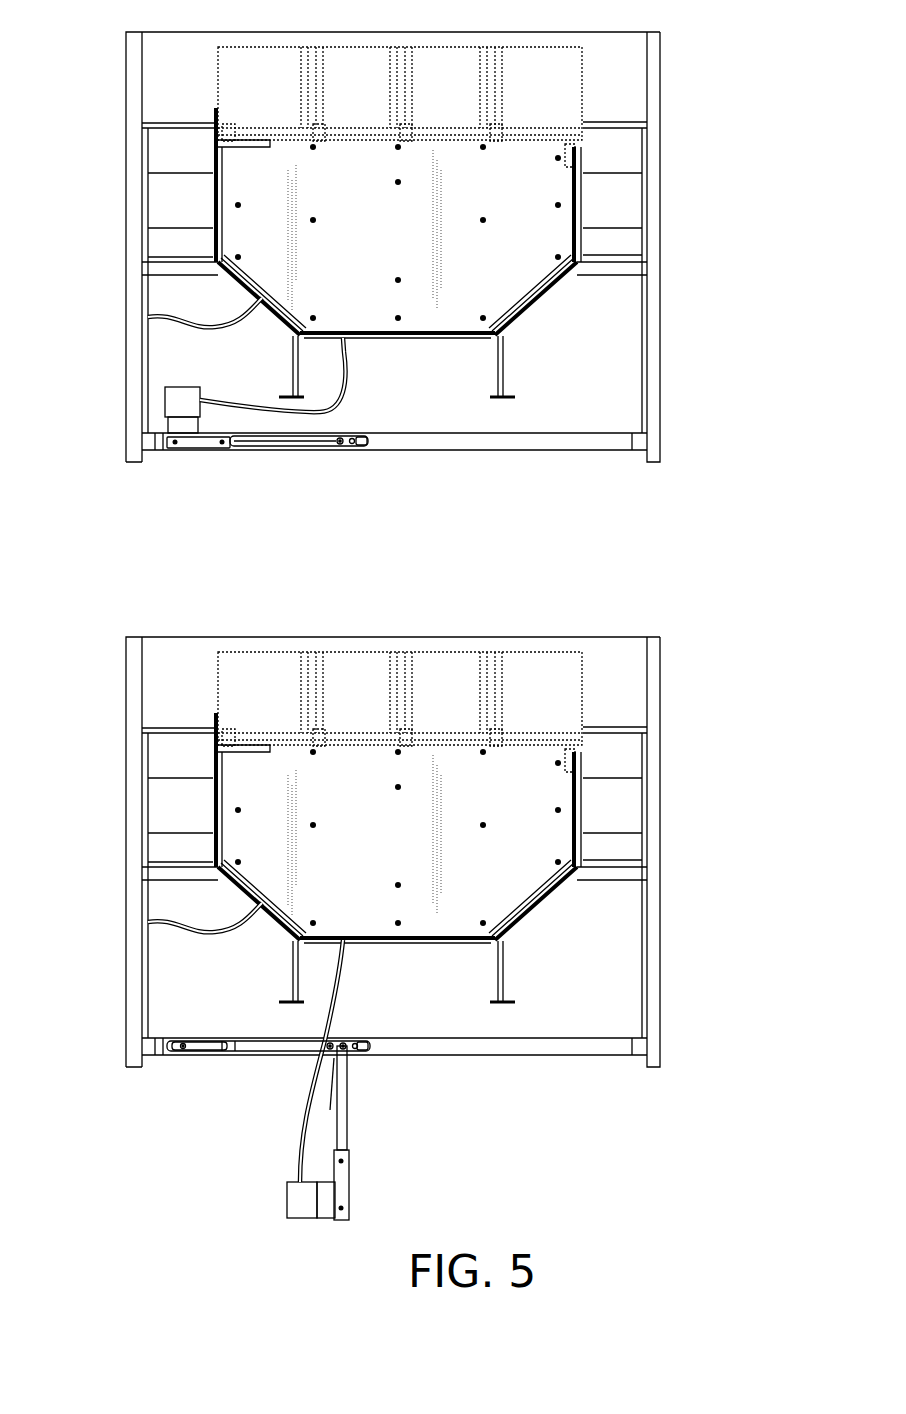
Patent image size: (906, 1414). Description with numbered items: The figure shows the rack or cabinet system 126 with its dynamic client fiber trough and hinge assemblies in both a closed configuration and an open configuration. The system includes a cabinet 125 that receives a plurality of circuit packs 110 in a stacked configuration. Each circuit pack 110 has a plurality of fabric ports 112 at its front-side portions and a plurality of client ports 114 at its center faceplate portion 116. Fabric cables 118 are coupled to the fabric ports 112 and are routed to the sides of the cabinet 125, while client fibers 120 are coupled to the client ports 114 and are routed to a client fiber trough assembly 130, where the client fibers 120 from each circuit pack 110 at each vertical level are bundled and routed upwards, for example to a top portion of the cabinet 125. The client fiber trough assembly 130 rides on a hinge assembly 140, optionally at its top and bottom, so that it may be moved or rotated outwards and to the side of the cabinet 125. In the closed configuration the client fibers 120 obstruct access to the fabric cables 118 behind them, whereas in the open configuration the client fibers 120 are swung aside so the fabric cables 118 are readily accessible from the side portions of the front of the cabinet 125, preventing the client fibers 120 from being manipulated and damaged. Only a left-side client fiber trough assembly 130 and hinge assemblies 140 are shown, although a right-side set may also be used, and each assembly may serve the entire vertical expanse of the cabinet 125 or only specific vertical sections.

The circuit pack 110 is at (389, 567).
The fabric ports 112 is at (255, 329).
The client ports 114 is at (388, 368).
The center faceplate portion 116 is at (455, 363).
The fabric cables 118 is at (120, 314).
The client fibers 120 is at (273, 441).
The cabinet 125 is at (675, 397).
The rack or cabinet system 126 is at (688, 117).
The client fiber trough assembly 130 is at (143, 408).
The hinge assembly 140 is at (202, 468).